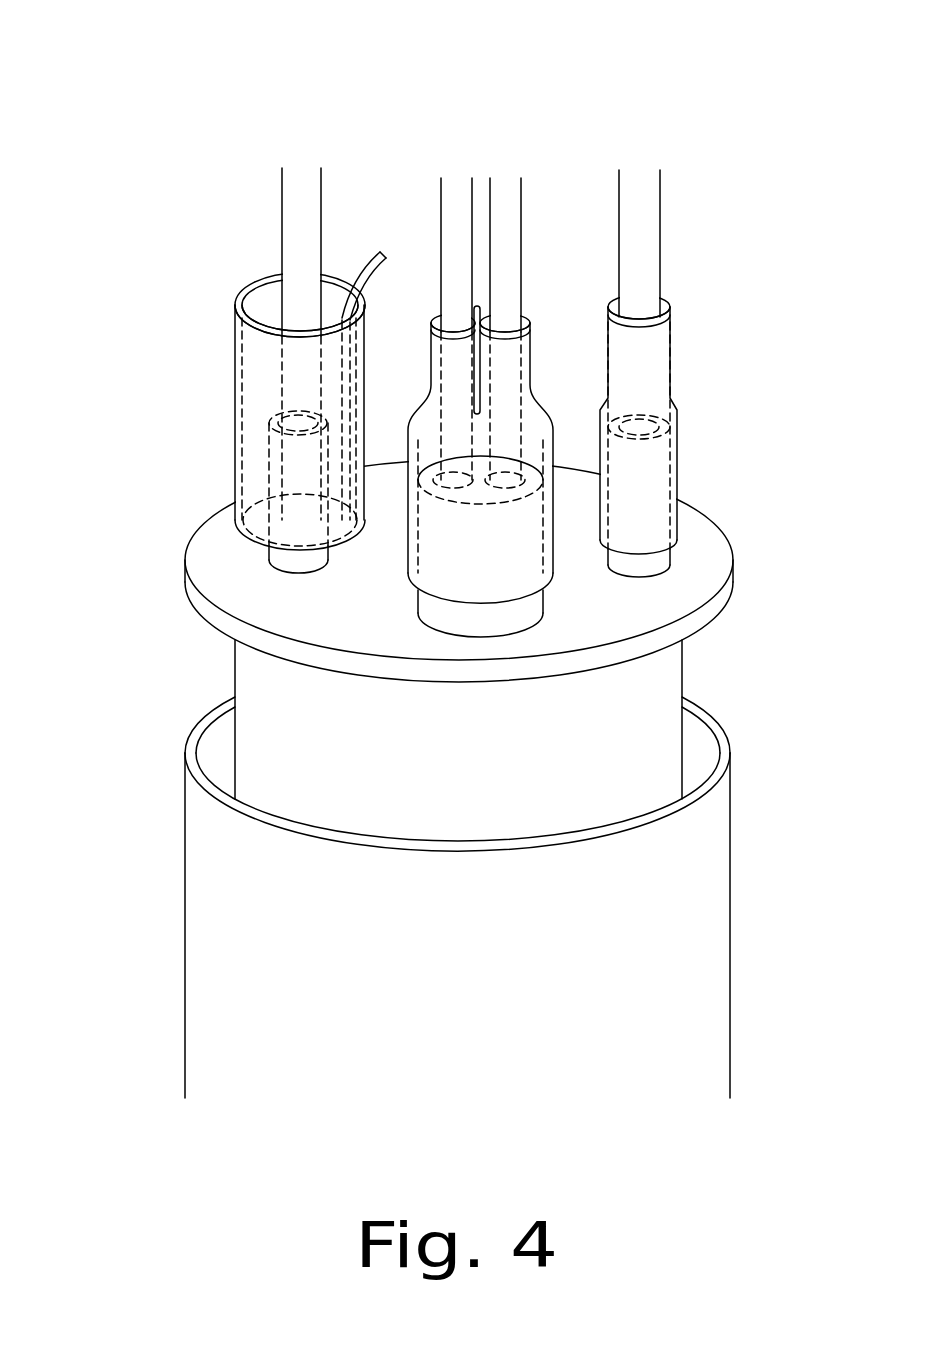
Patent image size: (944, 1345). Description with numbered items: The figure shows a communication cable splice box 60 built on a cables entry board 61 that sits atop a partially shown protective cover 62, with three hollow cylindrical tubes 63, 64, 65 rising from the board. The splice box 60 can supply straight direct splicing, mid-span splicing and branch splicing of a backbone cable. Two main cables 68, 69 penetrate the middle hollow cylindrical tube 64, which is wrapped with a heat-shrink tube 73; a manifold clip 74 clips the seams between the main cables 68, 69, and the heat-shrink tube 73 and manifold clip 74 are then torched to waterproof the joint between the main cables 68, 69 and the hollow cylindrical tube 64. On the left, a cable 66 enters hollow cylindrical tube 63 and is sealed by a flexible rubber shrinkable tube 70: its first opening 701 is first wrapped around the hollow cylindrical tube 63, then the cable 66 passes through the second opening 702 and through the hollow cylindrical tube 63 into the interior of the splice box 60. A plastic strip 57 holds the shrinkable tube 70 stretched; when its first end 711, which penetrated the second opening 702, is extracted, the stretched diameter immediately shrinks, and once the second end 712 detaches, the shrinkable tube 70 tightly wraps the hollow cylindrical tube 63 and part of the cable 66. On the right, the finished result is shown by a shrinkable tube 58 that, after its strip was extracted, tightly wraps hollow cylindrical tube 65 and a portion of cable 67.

The communication cable splice box 60 is at (258, 57).
The cables entry board 61 is at (707, 557).
The protective cover 62 is at (708, 866).
The hollow cylindrical tube 63 is at (268, 490).
The hollow cylindrical tube 64 is at (548, 542).
The hollow cylindrical tube 65 is at (675, 486).
The cable 66 is at (281, 205).
The cable 67 is at (660, 232).
The main cable 68 is at (441, 212).
The main cable 69 is at (521, 212).
The flexible rubber shrinkable tube 70 is at (217, 421).
The first opening 701 is at (340, 549).
The second opening 702 is at (242, 343).
The first end 711 is at (383, 250).
The second end 712 is at (240, 300).
The plastic strip 57 is at (347, 383).
The shrinkable tube 58 is at (695, 436).
The heat-shrink tube 73 is at (524, 466).
The manifold clip 74 is at (483, 362).